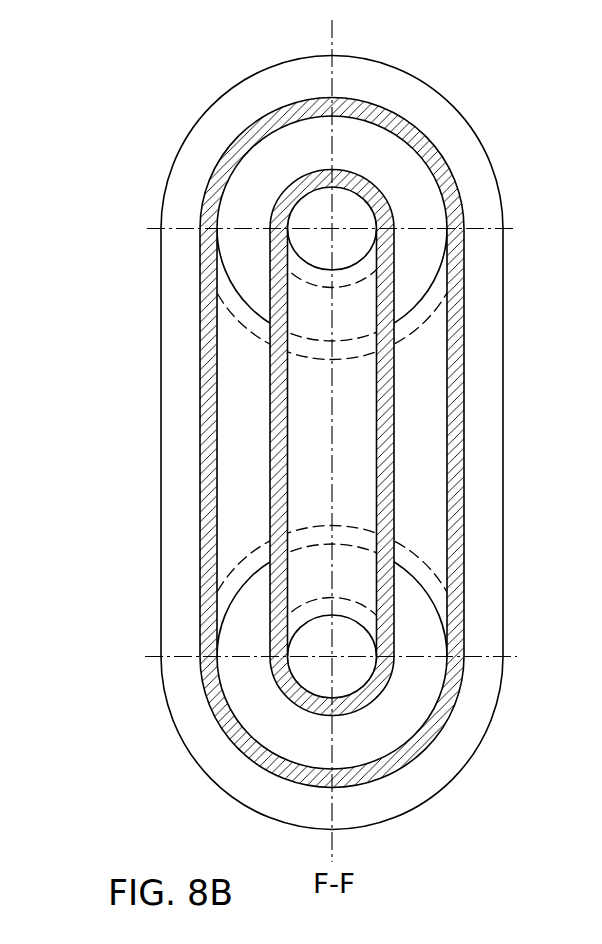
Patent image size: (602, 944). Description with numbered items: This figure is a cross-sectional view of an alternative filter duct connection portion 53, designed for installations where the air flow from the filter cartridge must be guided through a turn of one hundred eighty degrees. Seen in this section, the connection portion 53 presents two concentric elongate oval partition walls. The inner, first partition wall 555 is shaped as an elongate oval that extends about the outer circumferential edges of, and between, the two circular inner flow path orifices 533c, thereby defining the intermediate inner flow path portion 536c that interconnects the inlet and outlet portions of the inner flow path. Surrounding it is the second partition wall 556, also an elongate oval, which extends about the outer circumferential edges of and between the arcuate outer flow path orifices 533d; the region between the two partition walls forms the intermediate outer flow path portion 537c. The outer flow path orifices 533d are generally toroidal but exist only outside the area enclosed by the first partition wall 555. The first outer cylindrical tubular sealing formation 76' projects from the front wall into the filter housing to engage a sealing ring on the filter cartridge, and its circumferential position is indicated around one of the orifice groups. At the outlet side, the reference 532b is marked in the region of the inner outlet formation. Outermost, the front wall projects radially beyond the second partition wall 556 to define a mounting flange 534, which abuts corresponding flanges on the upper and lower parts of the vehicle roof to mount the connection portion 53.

The filter duct connection portion 53 is at (130, 282).
The mounting flange 534 is at (448, 118).
The second partition wall 556 is at (460, 332).
The first partition wall 555 is at (388, 443).
The intermediate inner flow path portion 536c is at (363, 467).
The intermediate outer flow path portion 537c is at (243, 443).
The inner flow path orifices 533c is at (348, 210).
The outer flow path orifices 533d is at (238, 198).
The cam surface 532b is at (233, 305).
The first outer cylindrical tubular sealing formation 76' is at (279, 578).